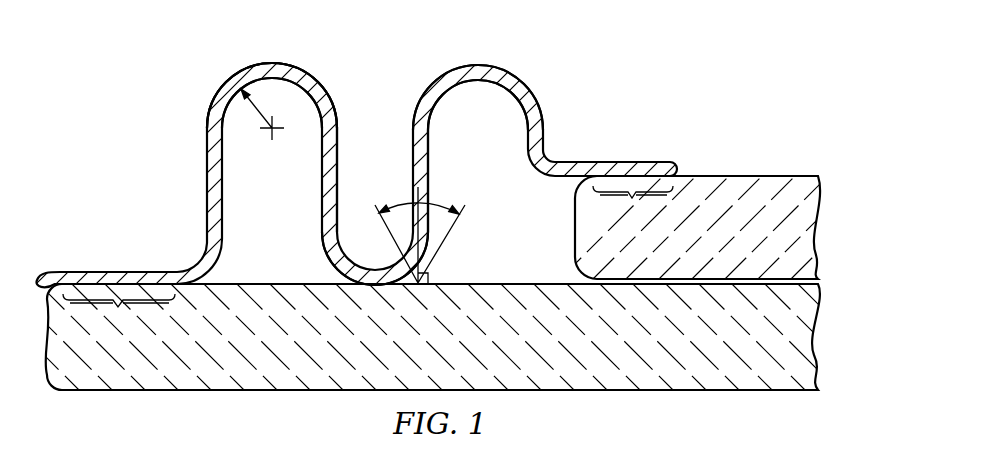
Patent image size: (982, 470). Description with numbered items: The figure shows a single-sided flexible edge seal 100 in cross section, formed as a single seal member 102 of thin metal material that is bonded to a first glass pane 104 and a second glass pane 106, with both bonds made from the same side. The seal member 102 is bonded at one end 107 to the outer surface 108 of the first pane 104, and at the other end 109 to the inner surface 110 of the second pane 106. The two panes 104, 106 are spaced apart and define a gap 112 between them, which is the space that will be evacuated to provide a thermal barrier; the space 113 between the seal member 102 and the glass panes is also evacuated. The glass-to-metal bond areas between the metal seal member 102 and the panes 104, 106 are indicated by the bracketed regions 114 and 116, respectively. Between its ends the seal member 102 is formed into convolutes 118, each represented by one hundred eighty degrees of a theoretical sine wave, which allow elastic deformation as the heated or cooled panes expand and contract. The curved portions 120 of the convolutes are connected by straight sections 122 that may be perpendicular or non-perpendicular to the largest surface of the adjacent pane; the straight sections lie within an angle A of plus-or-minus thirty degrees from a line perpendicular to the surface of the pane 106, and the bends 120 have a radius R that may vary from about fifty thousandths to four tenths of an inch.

The flexible edge seal 100 is at (452, 222).
The seal member 102 is at (544, 145).
The first glass pane 104 is at (717, 176).
The second glass pane 106 is at (676, 390).
The one end 107 is at (660, 150).
The outer surface 108 is at (787, 176).
The other end 109 is at (67, 263).
The inner surface 110 is at (228, 284).
The gap 112 is at (592, 279).
The space 113 is at (290, 186).
The glass-to-metal bond area 114 is at (633, 206).
The glass-to-metal bond area 116 is at (119, 315).
The convolute 118 is at (298, 62).
The curved portion 120 is at (246, 68).
The straight section 122 is at (338, 178).
The radius R is at (262, 114).
The angle A is at (400, 208).